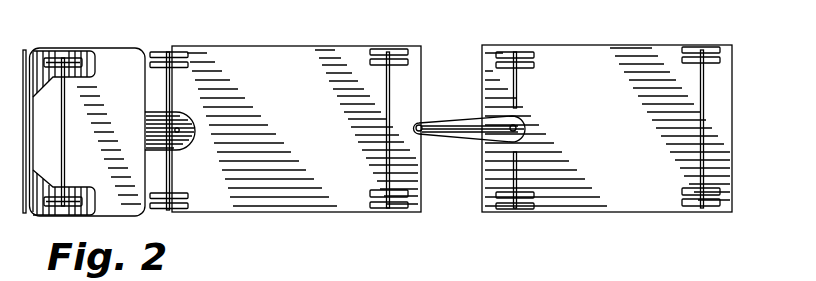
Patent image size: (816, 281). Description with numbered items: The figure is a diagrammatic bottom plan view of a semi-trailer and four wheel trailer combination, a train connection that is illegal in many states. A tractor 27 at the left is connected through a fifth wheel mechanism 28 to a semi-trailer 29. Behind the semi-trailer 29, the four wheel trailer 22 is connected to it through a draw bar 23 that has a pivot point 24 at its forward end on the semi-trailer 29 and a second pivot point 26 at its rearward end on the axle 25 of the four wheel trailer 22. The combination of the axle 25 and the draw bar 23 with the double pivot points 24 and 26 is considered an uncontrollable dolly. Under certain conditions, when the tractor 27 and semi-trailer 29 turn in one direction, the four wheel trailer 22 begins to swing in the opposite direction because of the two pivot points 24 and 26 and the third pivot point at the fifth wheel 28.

The four wheel trailer 22 is at (607, 128).
The draw bar 23 is at (453, 120).
The pivot point 24 is at (416, 126).
The axle 25 is at (511, 184).
The pivot point 26 is at (527, 120).
The tractor 27 is at (84, 132).
The fifth wheel mechanism 28 is at (178, 150).
The semi-trailer 29 is at (285, 129).